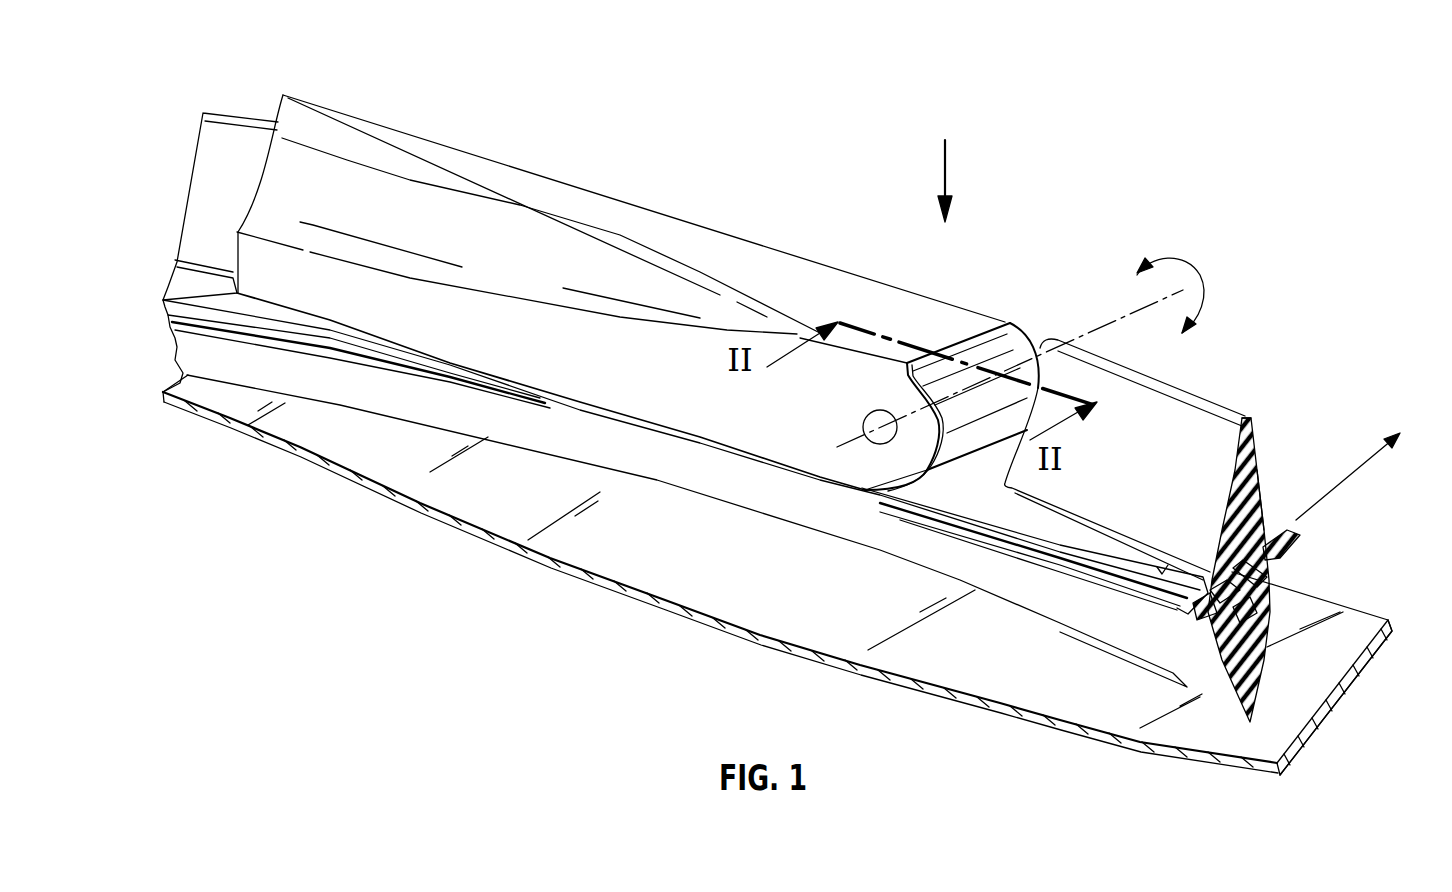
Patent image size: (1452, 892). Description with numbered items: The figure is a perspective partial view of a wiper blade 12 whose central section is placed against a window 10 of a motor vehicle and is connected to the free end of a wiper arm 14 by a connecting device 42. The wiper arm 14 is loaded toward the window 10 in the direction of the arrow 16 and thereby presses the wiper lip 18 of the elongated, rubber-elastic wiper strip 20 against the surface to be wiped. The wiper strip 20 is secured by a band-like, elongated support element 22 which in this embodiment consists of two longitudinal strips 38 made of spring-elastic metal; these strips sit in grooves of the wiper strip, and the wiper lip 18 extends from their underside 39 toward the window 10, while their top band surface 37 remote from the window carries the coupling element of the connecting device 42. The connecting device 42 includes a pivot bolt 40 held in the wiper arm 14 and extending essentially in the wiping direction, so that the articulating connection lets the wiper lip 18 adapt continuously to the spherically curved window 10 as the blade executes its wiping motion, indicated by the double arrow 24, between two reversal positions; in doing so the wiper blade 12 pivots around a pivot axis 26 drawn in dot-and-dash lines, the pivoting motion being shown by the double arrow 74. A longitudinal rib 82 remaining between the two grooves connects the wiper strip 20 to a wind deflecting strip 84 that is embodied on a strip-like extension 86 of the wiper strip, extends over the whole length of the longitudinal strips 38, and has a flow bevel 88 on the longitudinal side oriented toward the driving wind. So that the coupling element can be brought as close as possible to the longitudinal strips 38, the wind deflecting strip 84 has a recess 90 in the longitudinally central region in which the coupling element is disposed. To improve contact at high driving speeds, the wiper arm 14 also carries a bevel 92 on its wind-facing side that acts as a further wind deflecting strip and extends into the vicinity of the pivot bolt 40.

The window 10 is at (640, 594).
The wiper blade 12 is at (1282, 579).
The wiper arm 14 is at (716, 210).
The arrow 16 is at (948, 150).
The wiper lip 18 is at (1252, 676).
The wiper strip 20 is at (1390, 632).
The support element 22 is at (1203, 600).
The double arrow 24 is at (1357, 468).
The pivot axis 26 is at (1120, 316).
The top band surface 37 is at (1160, 570).
The longitudinal strips 38 is at (1083, 563).
The underside 39 is at (1207, 593).
The pivot bolt 40 is at (877, 417).
The connecting device 42 is at (1020, 298).
The double arrow 74 is at (1197, 265).
The longitudinal rib 82 is at (1283, 600).
The wind deflecting strip 84 is at (1208, 385).
The strip-like extension 86 is at (1268, 500).
The flow bevel 88 is at (1187, 437).
The recess 90 is at (990, 462).
The bevel 92 is at (475, 217).